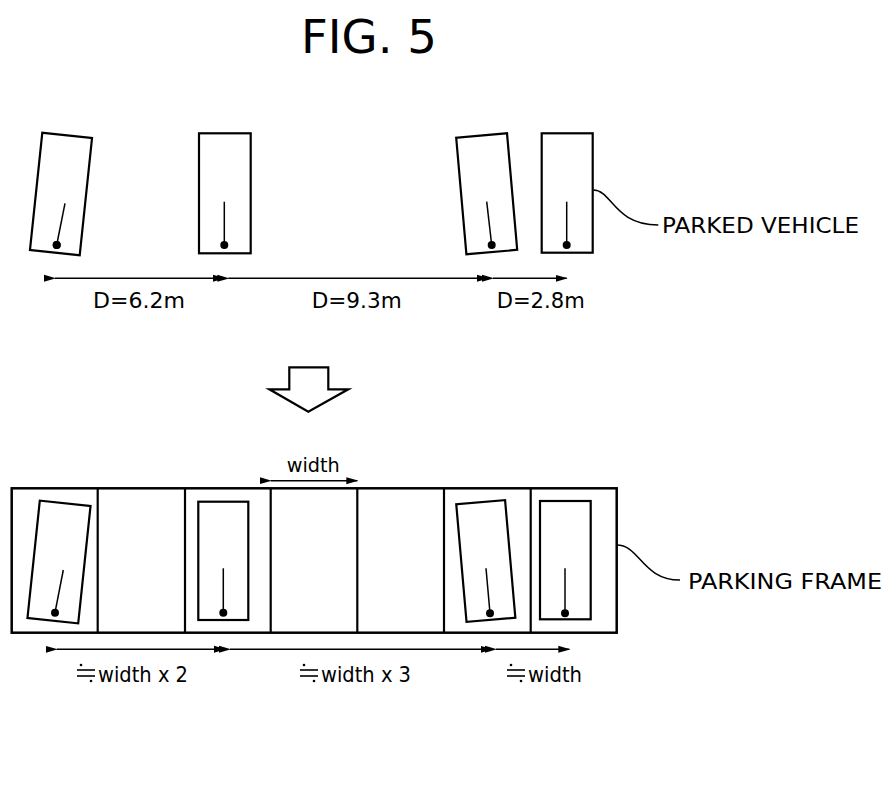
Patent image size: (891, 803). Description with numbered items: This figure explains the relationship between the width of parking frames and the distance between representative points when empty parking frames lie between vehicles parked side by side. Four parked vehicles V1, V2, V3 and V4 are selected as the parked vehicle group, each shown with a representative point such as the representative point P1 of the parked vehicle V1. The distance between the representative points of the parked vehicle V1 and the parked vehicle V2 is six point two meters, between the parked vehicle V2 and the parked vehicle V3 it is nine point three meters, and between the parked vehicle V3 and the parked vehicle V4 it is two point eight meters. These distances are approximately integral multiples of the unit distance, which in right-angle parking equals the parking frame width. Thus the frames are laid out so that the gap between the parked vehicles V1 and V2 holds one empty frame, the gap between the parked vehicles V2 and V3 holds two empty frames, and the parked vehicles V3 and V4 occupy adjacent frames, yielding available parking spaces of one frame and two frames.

The parked vehicle V1 is at (61, 179).
The parked vehicle V2 is at (225, 178).
The parked vehicle V3 is at (486, 178).
The parked vehicle V4 is at (567, 177).
The representative point P1 is at (54, 249).